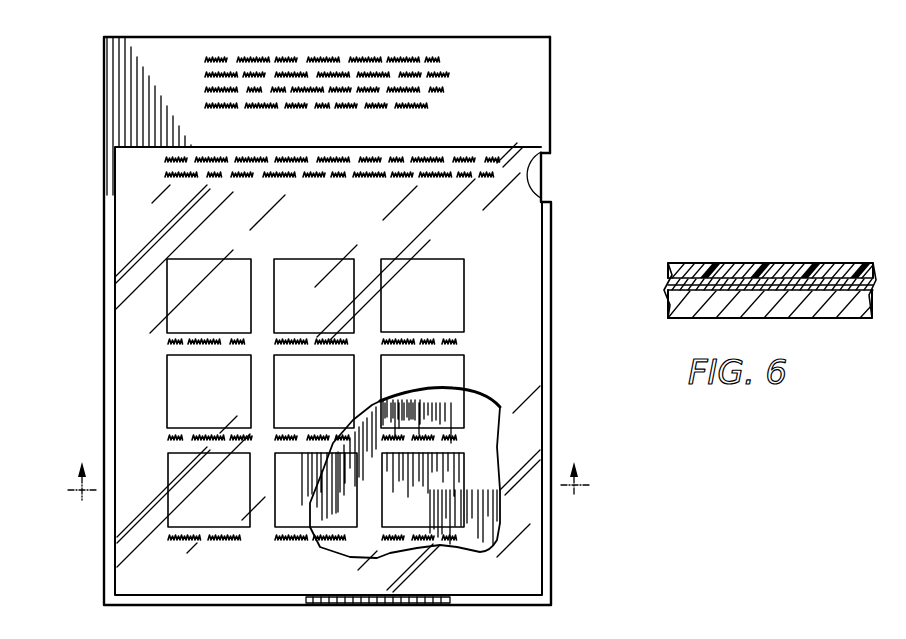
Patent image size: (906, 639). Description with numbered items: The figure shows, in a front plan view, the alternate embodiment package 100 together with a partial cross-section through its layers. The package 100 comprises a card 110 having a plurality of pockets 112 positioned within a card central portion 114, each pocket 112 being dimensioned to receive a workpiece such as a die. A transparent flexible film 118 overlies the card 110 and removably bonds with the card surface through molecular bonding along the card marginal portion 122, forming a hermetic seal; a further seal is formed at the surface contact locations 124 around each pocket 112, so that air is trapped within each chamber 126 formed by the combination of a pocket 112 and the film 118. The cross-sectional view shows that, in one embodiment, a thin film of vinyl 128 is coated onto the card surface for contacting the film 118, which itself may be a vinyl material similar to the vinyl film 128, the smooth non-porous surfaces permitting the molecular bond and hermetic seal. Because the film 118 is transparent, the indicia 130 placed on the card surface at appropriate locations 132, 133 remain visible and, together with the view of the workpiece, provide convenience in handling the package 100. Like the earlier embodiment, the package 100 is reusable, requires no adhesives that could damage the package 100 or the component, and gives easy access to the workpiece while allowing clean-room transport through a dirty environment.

In FIG. 4, the package 100 is at (76, 84).
In FIG. 4, the card 110 is at (118, 133).
In FIG. 6, the card 110 is at (766, 301).
In FIG. 4, the pockets 112 is at (453, 502).
In FIG. 4, the card central portion 114 is at (248, 293).
In FIG. 4, the flexible film 118 is at (536, 147).
In FIG. 6, the flexible film 118 is at (828, 238).
In FIG. 4, the card marginal portion 122 is at (130, 378).
In FIG. 4, the surface contact locations 124 is at (263, 508).
In FIG. 4, the chamber 126 is at (437, 258).
In FIG. 6, the thin film of vinyl 128 is at (668, 284).
In FIG. 4, the indicia 130 is at (357, 58).
In FIG. 4, the indicia location 132 is at (527, 118).
In FIG. 4, the indicia location 133 is at (467, 343).